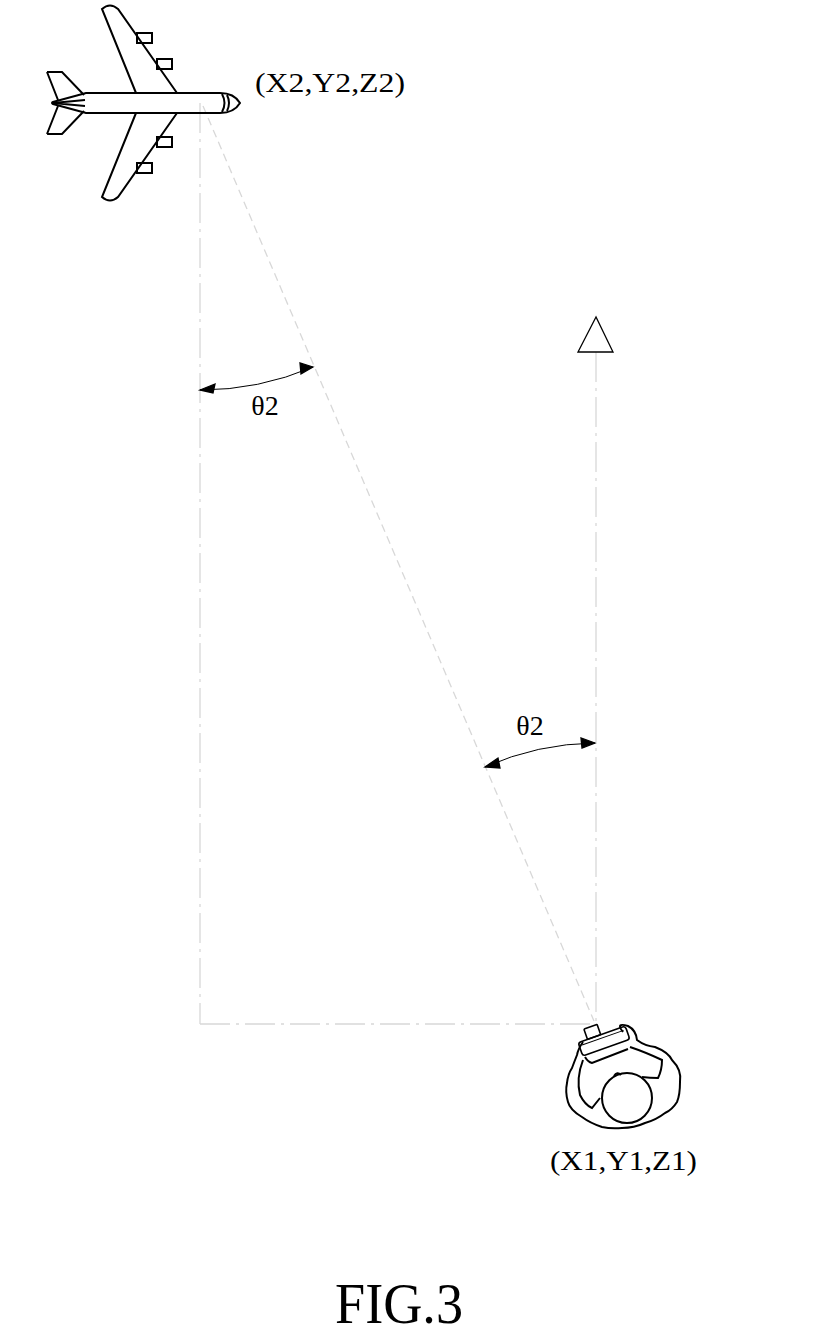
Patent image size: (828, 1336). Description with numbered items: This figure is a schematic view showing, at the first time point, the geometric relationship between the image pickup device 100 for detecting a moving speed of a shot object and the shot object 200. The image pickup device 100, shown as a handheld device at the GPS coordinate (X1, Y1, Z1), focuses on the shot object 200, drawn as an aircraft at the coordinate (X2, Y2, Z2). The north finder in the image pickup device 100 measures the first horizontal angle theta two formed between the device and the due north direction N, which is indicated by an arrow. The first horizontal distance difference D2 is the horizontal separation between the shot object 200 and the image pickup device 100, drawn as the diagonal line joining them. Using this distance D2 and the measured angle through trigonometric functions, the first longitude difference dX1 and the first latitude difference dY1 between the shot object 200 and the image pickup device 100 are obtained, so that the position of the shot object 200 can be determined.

The image pickup device 100 is at (612, 1028).
The shot object 200 is at (208, 98).
The due north direction N is at (595, 651).
The first latitude difference dY1 is at (169, 563).
The first longitude difference dX1 is at (395, 1042).
The first horizontal distance difference D2 is at (398, 563).